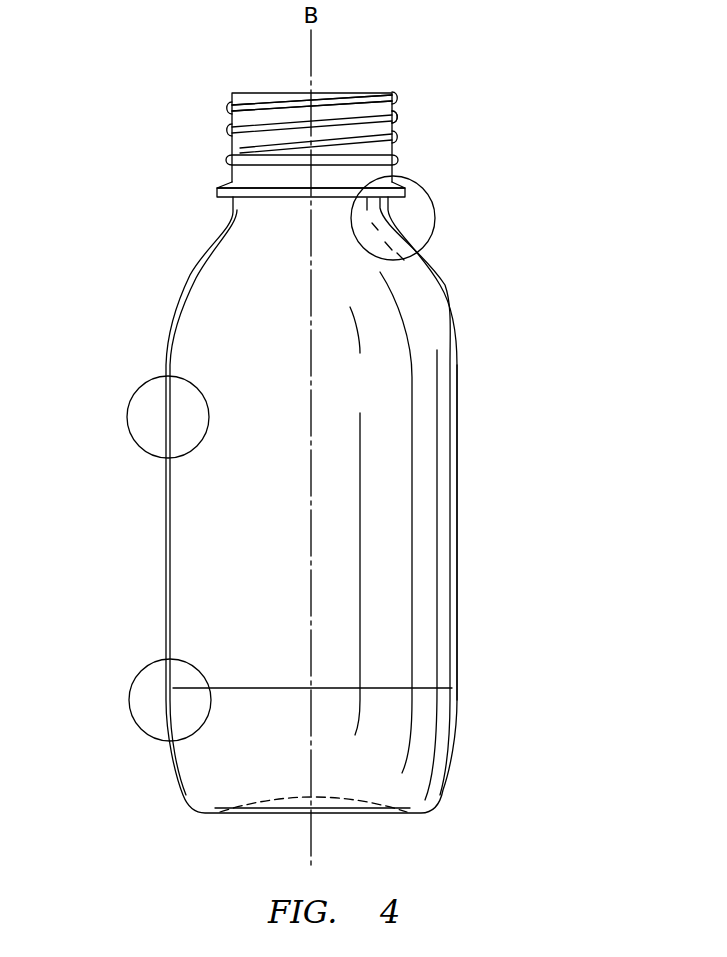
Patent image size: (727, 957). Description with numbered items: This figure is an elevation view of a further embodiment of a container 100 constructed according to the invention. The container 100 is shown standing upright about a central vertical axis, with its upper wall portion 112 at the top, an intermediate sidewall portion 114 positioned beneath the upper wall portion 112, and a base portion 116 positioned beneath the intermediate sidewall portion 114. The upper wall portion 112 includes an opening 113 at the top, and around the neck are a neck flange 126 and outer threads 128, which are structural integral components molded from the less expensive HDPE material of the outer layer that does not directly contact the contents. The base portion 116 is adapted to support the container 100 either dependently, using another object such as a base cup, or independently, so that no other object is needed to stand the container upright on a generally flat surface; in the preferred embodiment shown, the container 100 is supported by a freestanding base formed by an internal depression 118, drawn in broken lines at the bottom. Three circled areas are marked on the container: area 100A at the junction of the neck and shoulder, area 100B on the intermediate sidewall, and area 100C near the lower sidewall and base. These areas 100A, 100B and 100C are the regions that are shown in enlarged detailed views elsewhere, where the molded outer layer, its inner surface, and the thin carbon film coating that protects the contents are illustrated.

The container 100 is at (540, 473).
The area 100A is at (417, 187).
The area 100B is at (127, 417).
The area 100C is at (129, 700).
The upper wall portion 112 is at (233, 142).
The opening 113 is at (320, 88).
The intermediate sidewall portion 114 is at (460, 508).
The base portion 116 is at (460, 697).
The internal depression 118 is at (347, 800).
The neck flange 126 is at (217, 192).
The outer threads 128 is at (393, 118).